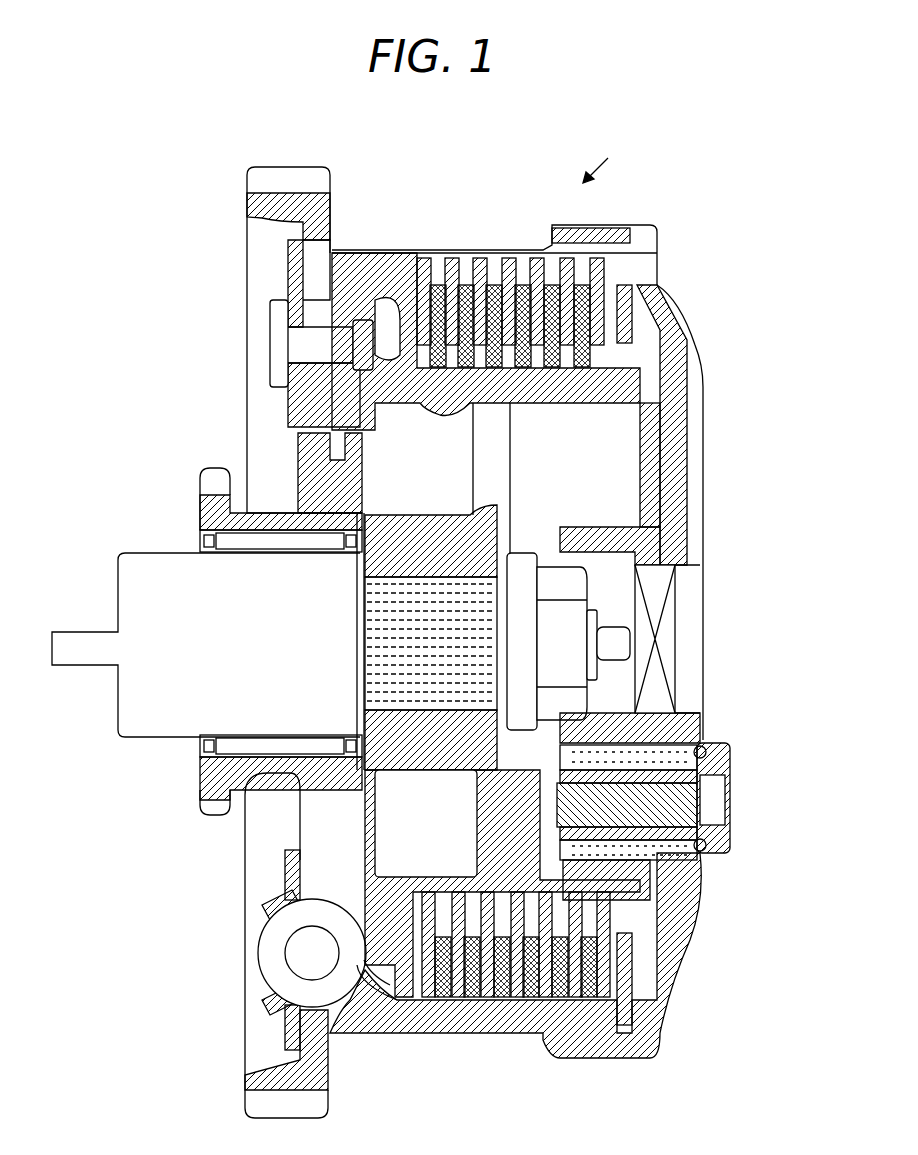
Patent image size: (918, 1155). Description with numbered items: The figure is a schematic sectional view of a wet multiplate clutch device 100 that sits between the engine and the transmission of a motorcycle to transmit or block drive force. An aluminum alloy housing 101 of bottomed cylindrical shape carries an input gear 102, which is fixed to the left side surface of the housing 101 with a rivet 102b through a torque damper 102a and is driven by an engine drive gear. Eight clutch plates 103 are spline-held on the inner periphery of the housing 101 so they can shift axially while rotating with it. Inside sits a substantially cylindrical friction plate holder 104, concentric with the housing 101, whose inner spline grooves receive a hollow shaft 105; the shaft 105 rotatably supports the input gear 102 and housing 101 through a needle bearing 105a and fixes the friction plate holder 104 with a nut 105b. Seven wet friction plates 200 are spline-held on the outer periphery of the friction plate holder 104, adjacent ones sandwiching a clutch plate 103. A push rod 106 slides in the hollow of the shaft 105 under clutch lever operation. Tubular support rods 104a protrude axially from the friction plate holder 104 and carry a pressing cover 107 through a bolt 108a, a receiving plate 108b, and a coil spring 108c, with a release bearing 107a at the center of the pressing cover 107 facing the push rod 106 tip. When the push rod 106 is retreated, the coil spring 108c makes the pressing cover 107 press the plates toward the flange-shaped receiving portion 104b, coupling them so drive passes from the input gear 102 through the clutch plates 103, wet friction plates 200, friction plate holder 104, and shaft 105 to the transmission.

The wet multiplate clutch device 100 is at (621, 161).
The housing 101 is at (407, 1035).
The input gear 102 is at (297, 167).
The torque damper 102a is at (258, 953).
The rivet 102b is at (270, 342).
The clutch plate 103 is at (510, 256).
The friction plate holder 104 is at (577, 405).
The tubular support rod 104a is at (470, 790).
The receiving portion 104b is at (388, 298).
The shaft 105 is at (138, 553).
The needle bearing 105a is at (200, 748).
The nut 105b is at (543, 553).
The push rod 106 is at (603, 627).
The pressing cover 107 is at (682, 440).
The release bearing 107a is at (677, 612).
The bolt 108a is at (732, 798).
The receiving plate 108b is at (732, 845).
The coil spring 108c is at (706, 745).
The wet friction plate 200 is at (437, 283).